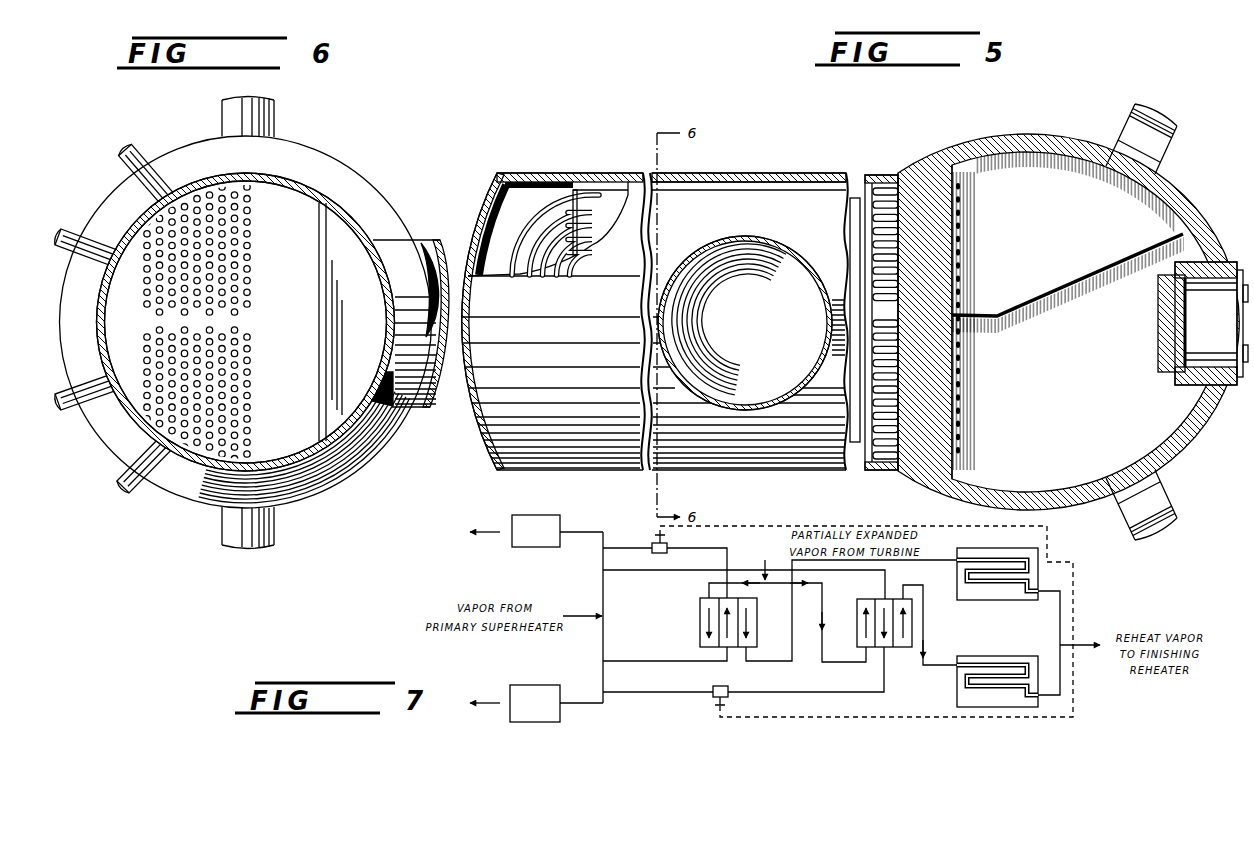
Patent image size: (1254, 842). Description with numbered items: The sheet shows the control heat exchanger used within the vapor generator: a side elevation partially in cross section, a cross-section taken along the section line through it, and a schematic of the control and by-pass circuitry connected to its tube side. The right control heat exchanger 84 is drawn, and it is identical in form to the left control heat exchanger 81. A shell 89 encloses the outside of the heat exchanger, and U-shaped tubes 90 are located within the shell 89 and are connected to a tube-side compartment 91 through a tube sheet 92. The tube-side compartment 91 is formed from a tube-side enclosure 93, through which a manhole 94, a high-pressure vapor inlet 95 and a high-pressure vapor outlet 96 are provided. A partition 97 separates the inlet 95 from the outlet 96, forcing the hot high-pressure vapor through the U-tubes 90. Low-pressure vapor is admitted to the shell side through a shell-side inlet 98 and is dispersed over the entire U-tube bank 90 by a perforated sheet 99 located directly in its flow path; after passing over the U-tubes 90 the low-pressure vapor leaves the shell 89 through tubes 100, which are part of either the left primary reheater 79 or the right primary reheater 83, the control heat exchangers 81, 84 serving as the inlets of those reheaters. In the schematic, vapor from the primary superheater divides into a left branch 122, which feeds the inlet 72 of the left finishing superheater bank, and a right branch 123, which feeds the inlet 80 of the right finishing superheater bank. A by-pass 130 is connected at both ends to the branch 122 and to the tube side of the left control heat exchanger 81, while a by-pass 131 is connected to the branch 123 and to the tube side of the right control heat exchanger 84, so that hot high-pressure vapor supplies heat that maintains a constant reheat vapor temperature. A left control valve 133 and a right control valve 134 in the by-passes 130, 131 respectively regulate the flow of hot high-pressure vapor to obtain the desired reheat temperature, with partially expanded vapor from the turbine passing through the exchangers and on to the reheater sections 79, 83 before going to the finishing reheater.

In FIG. 7, the inlet of left finishing superheater bank 72 is at (530, 515).
In FIG. 7, the left primary reheater 79 is at (998, 600).
In FIG. 7, the inlet of right finishing superheater bank 80 is at (531, 685).
In FIG. 7, the left control heat exchanger 81 is at (700, 624).
In FIG. 7, the right primary reheater 83 is at (1030, 656).
In FIG. 7, the right control heat exchanger 84 is at (912, 612).
In FIG. 6, the shell 89 is at (362, 414).
In FIG. 5, the shell 89 is at (793, 470).
In FIG. 5, the U-shaped tubes 90 is at (890, 457).
In FIG. 5, the tube-side compartment 91 is at (1162, 418).
In FIG. 5, the tube sheet 92 is at (935, 463).
In FIG. 6, the tube-side enclosure 93 is at (190, 501).
In FIG. 5, the tube-side enclosure 93 is at (1066, 506).
In FIG. 5, the manhole 94 is at (1237, 332).
In FIG. 6, the high-pressure vapor inlet 95 is at (276, 538).
In FIG. 5, the high-pressure vapor inlet 95 is at (1162, 537).
In FIG. 6, the high-pressure vapor outlet 96 is at (275, 122).
In FIG. 5, the high-pressure vapor outlet 96 is at (1162, 113).
In FIG. 5, the partition 97 is at (1060, 283).
In FIG. 6, the shell-side inlet 98 is at (432, 240).
In FIG. 5, the shell-side inlet 98 is at (777, 388).
In FIG. 6, the perforated sheet 99 is at (320, 358).
In FIG. 5, the perforated sheet 99 is at (852, 197).
In FIG. 6, the tubes 100 is at (122, 470).
In FIG. 7, the left branch 122 is at (603, 560).
In FIG. 7, the right branch 123 is at (603, 675).
In FIG. 7, the by-pass 130 is at (700, 548).
In FIG. 7, the by-pass 131 is at (677, 570).
In FIG. 7, the left control valve 133 is at (655, 543).
In FIG. 7, the right control valve 134 is at (713, 692).